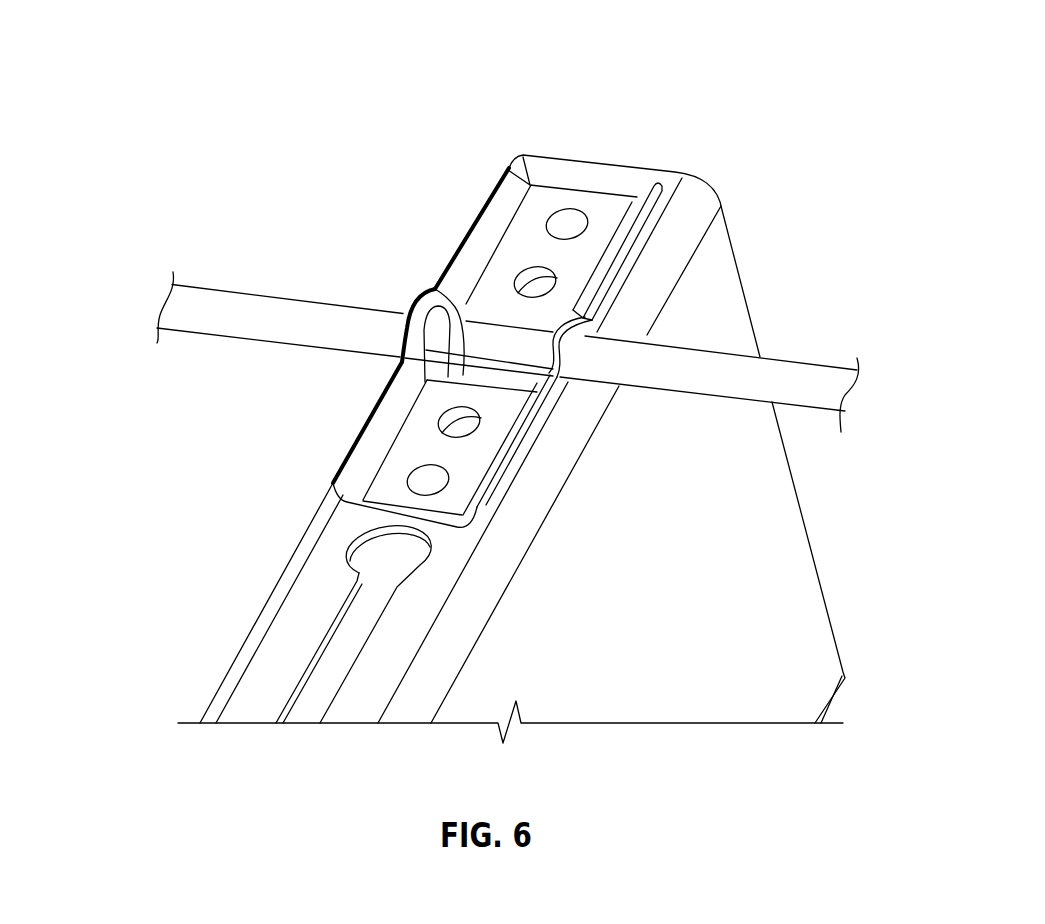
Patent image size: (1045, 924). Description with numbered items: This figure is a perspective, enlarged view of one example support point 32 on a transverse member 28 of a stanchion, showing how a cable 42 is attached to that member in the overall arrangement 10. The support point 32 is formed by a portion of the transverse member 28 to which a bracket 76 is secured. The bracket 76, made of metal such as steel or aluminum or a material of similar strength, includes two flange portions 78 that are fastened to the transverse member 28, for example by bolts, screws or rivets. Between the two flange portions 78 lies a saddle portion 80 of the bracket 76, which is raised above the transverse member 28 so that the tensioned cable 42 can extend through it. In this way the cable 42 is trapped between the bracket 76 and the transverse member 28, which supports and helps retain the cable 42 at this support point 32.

The cable routing assembly 10 is at (124, 57).
The transverse member 28 is at (797, 598).
The support point 32 is at (491, 221).
The cable 42 is at (254, 302).
The bracket 76 is at (528, 424).
The flange portions 78 is at (638, 217).
The saddle portion 80 is at (414, 312).